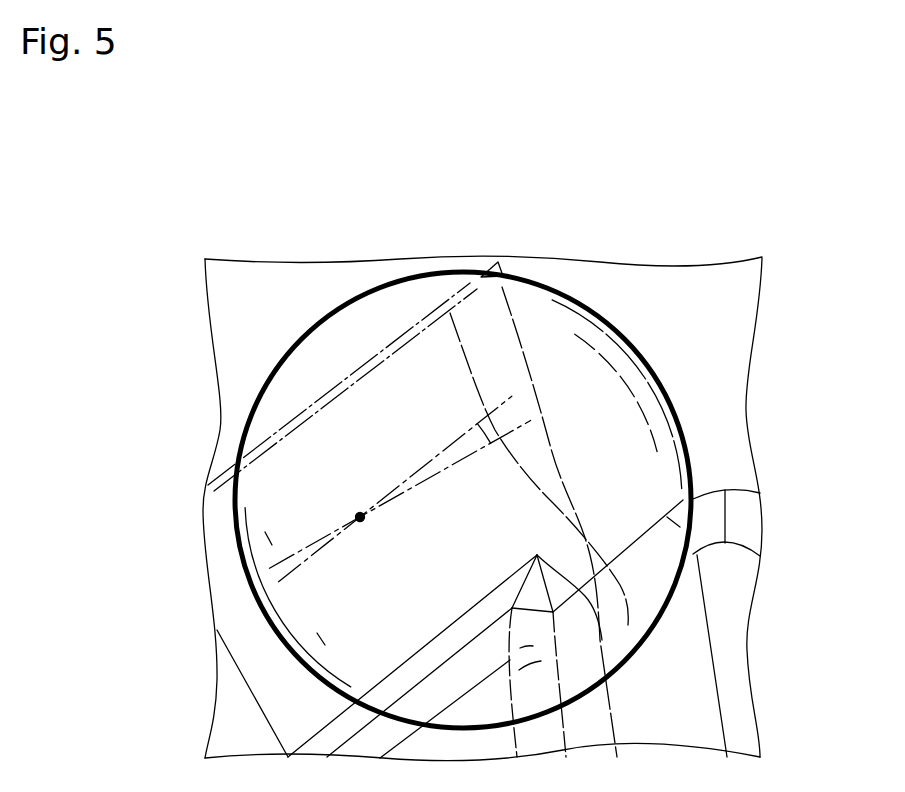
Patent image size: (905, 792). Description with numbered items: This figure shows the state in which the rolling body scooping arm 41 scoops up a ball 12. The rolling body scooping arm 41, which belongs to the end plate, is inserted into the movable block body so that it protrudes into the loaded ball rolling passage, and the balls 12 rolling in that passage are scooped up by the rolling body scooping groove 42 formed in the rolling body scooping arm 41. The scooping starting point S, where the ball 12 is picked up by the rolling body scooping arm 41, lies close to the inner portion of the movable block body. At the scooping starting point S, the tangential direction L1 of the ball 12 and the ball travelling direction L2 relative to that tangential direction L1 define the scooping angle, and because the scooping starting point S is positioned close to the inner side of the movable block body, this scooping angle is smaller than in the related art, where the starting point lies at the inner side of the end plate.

The ball 12 is at (593, 448).
The rolling body scooping arm 41 is at (215, 462).
The rolling body scooping groove 42 is at (270, 668).
The scooping starting point S is at (358, 515).
The tangential direction L1 is at (437, 477).
The ball travelling direction L2 is at (430, 460).